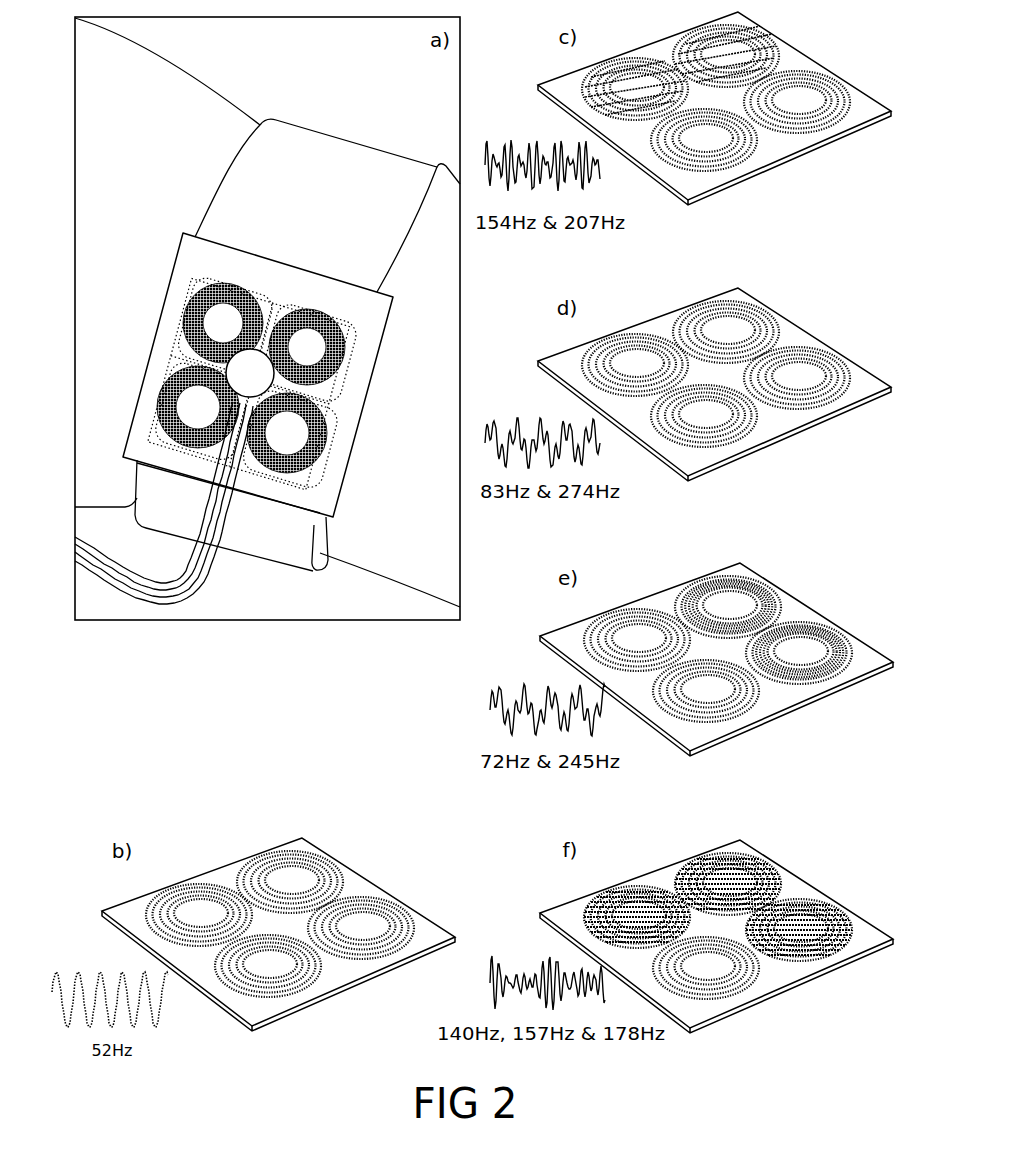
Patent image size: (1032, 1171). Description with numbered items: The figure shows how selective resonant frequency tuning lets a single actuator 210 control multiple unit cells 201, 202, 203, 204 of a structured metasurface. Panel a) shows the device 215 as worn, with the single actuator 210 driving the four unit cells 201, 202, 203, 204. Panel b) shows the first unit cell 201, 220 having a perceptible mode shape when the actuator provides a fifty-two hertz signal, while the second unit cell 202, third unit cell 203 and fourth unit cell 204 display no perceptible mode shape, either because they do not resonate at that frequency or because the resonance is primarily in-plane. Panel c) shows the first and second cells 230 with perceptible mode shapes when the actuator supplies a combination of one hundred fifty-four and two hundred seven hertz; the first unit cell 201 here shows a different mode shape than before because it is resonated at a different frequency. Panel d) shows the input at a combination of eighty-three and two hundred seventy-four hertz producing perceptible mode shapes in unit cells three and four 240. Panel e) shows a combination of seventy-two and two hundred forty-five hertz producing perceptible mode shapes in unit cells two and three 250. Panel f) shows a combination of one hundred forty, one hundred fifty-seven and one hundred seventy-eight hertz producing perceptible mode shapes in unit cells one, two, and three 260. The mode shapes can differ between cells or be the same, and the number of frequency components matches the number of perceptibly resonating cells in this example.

The first unit cell 201 is at (215, 295).
The second unit cell 202 is at (333, 328).
The third unit cell 203 is at (307, 415).
The fourth unit cell 204 is at (170, 430).
The actuator 210 is at (250, 373).
The device 215 is at (327, 187).
The first unit cell 220 is at (193, 902).
The first and second cells 230 is at (747, 57).
The unit cells three and four 240 is at (795, 383).
The unit cells two and three 250 is at (798, 642).
The unit cells one, two, and three 260 is at (807, 917).